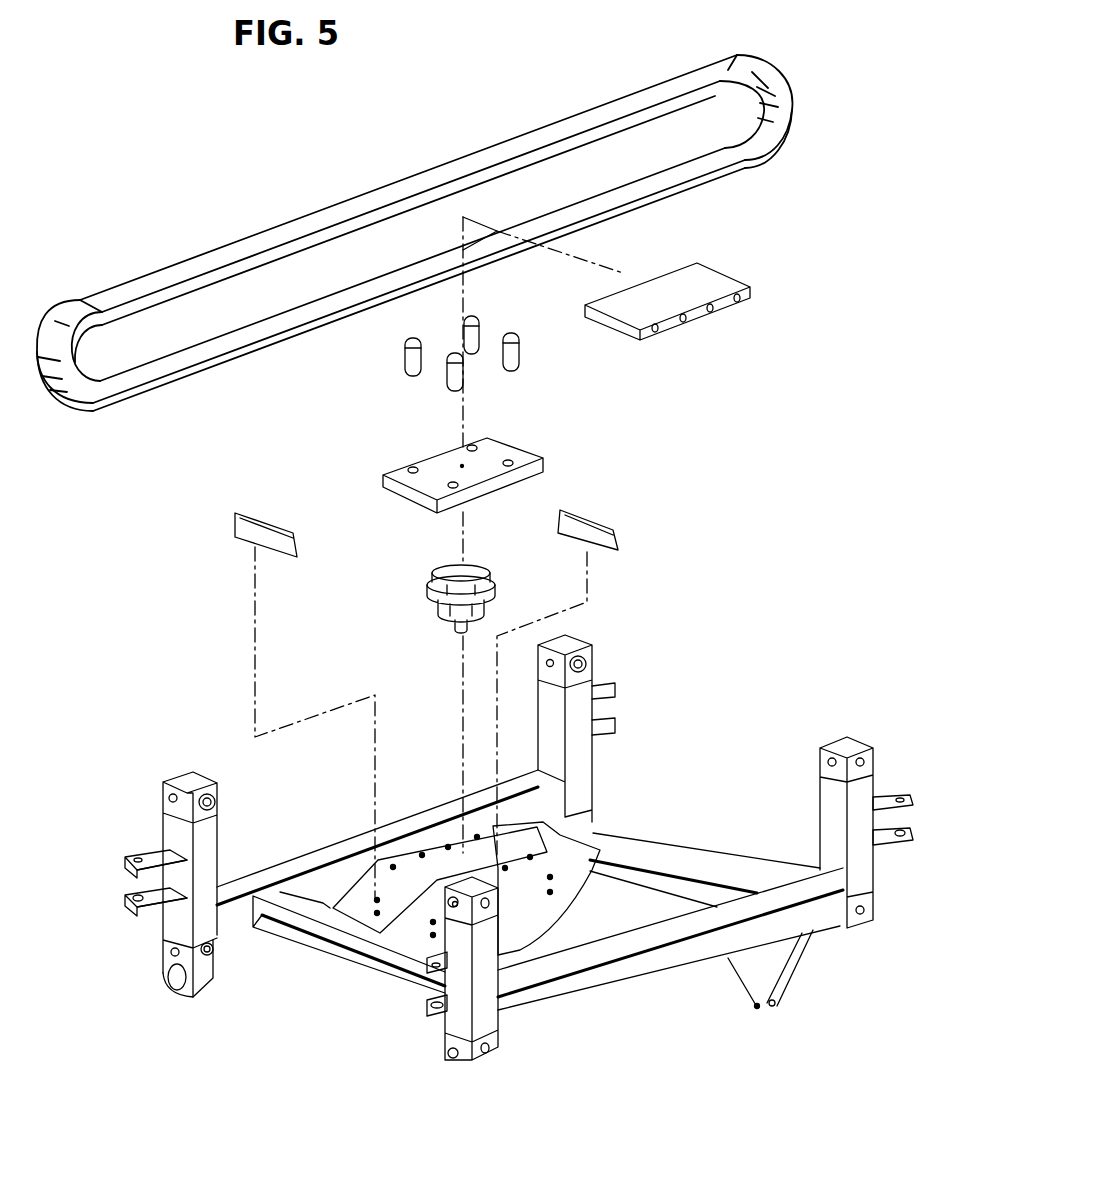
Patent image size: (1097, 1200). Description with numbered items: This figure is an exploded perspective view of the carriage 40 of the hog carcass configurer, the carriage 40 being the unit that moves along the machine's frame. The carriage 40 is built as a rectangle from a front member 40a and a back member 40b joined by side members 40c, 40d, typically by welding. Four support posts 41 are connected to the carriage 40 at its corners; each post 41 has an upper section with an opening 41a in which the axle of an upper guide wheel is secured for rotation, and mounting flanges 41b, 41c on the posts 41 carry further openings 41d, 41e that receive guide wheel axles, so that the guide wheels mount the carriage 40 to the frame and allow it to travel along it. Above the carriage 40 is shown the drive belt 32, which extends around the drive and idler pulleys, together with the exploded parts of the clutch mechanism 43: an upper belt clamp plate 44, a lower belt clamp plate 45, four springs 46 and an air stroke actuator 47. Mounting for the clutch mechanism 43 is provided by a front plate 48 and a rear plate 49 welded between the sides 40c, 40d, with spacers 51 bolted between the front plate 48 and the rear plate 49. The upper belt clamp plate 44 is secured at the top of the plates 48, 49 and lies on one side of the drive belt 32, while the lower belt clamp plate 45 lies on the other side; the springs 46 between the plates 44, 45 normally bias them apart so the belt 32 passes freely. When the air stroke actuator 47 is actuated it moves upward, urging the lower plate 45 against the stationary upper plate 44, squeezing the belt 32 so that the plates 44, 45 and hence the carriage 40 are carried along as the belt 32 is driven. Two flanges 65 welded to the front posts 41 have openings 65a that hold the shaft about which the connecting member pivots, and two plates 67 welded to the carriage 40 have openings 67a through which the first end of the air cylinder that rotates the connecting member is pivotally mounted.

The drive belt 32 is at (289, 219).
The carriage 40 is at (758, 700).
The front member 40a is at (323, 851).
The back member 40b is at (521, 1043).
The side member 40c is at (382, 963).
The side member 40d is at (667, 866).
The support post 41 is at (210, 845).
The opening 41a is at (212, 806).
The mounting flange 41b is at (155, 852).
The mounting flange 41c is at (157, 910).
The opening 41d is at (135, 850).
The opening 41e is at (132, 907).
The clutch mechanism 43 is at (595, 412).
The upper belt clamp plate 44 is at (704, 324).
The lower belt clamp plate 45 is at (417, 455).
The spring 46 is at (520, 341).
The air stroke actuator 47 is at (424, 597).
The front plate 48 is at (437, 848).
The rear plate 49 is at (545, 915).
The spacer 51 is at (230, 528).
The flange 65 is at (212, 966).
The opening 65a is at (177, 991).
The plate 67 is at (753, 983).
The opening 67a is at (762, 1012).